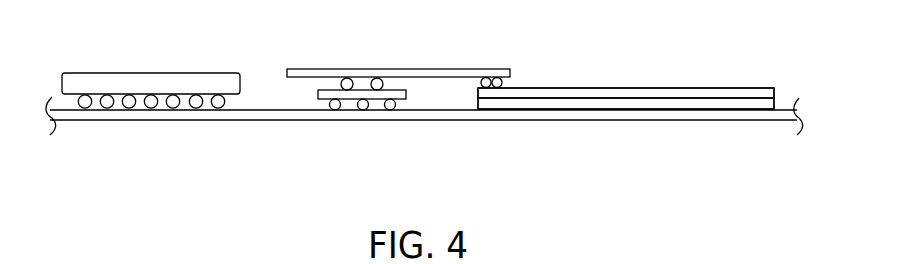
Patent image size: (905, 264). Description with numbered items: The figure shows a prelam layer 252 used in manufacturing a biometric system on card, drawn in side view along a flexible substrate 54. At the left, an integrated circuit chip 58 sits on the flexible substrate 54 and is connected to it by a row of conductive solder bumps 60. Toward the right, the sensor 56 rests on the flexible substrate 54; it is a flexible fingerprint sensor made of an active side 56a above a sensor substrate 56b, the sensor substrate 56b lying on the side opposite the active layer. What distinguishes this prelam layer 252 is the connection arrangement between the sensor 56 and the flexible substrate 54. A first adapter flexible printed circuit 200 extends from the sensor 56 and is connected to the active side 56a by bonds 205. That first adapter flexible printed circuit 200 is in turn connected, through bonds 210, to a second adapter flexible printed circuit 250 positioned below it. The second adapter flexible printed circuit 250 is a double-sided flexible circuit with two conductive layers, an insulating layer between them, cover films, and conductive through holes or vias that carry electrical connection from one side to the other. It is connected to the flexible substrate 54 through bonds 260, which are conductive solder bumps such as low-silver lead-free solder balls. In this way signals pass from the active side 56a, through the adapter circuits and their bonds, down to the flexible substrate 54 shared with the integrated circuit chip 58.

The flexible substrate 54 is at (737, 116).
The sensor 56 is at (644, 77).
The active side 56a is at (670, 92).
The sensor substrate 56b is at (605, 102).
The integrated circuit chip 58 is at (113, 77).
The bumps 60 is at (197, 96).
The first adapter flexible printed circuit 200 is at (460, 71).
The bonds 205 is at (503, 80).
The bonds 210 is at (377, 78).
The second adapter flexible printed circuit 250 is at (406, 95).
The prelam layer 252 is at (277, 143).
The bonds 260 is at (390, 110).